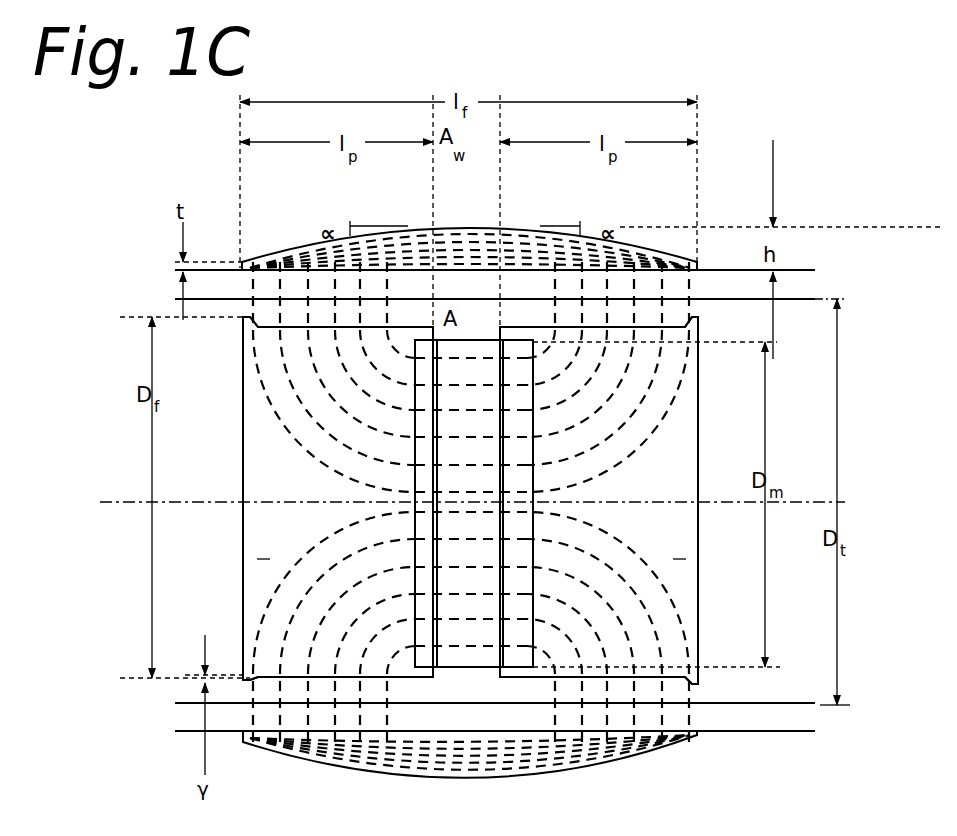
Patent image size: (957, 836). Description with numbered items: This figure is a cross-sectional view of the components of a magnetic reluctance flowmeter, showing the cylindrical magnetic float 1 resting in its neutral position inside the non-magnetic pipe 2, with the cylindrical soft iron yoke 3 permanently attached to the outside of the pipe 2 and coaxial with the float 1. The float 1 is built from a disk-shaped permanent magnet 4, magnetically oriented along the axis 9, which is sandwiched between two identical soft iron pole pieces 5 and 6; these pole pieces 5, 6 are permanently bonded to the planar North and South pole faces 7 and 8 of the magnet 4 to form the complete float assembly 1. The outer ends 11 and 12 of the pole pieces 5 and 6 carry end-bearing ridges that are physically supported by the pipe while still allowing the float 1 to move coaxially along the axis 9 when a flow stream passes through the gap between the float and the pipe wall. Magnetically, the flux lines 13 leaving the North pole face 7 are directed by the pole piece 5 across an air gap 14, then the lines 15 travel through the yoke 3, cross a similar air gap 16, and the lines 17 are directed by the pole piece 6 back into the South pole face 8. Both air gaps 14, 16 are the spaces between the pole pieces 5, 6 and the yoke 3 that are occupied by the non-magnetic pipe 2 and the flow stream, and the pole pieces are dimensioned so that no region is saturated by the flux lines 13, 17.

The magnetic float 1 is at (523, 567).
The non-magnetic flow pipe 2 is at (478, 296).
The soft iron yoke 3 is at (600, 765).
The disk-shaped permanent magnet 4 is at (473, 464).
The soft iron pole piece 5 is at (263, 549).
The soft iron pole piece 6 is at (679, 549).
The North pole face 7 is at (415, 498).
The South pole face 8 is at (533, 500).
The axis 9 is at (126, 500).
The outer end of pole piece 11 is at (243, 372).
The outer end of pole piece 12 is at (700, 382).
The magnetic flux lines 13 is at (290, 545).
The air gap 14 is at (250, 290).
The flux lines in yoke 15 is at (507, 225).
The air gap 16 is at (692, 295).
The magnetic flux lines 17 is at (622, 540).